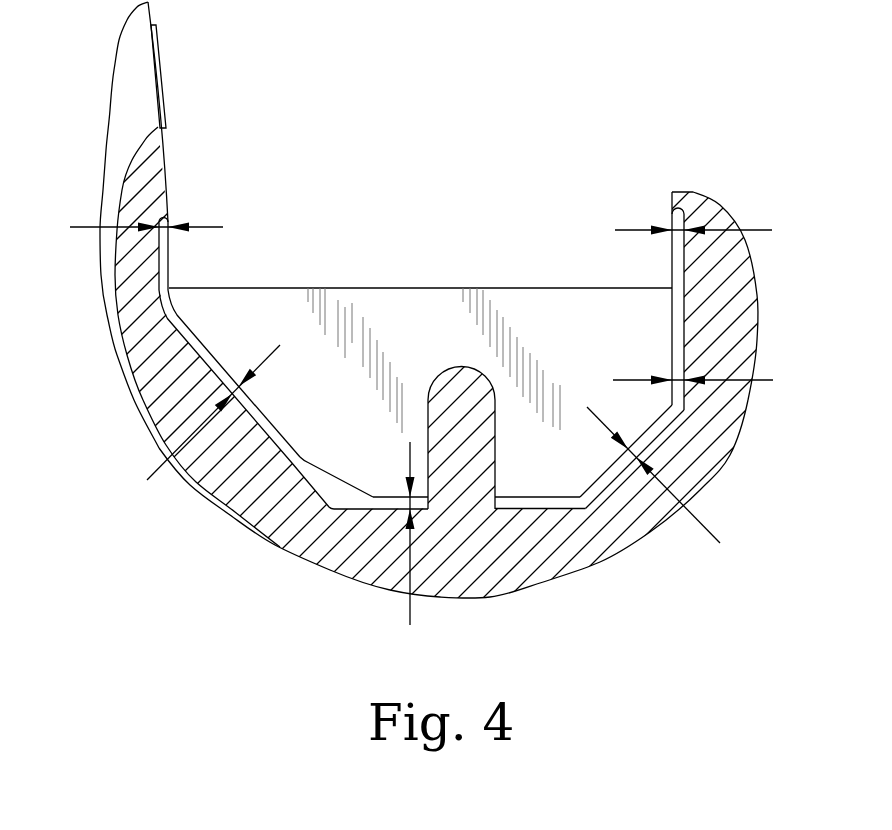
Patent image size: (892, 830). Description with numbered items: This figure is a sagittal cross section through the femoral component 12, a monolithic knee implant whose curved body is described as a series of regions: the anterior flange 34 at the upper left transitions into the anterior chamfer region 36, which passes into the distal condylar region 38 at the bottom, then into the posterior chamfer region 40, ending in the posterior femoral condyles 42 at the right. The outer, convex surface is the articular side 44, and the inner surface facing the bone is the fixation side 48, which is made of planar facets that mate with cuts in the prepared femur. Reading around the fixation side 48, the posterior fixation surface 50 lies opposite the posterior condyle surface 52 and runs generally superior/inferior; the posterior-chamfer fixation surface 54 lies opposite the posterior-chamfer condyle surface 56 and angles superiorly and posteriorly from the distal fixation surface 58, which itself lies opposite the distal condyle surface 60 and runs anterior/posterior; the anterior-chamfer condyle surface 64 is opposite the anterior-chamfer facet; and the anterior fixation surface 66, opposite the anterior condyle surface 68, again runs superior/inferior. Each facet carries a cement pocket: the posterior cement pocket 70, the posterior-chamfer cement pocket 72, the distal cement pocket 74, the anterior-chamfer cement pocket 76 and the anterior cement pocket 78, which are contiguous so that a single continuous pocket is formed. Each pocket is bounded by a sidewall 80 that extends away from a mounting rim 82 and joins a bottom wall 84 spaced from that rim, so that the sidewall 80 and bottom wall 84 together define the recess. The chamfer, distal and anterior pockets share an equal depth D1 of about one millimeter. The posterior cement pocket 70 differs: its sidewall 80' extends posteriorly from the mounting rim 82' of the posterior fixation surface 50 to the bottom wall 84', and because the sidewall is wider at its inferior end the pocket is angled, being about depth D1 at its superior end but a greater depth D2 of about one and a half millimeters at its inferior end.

The femoral component 12 is at (688, 100).
The anterior flange 34 is at (108, 273).
The anterior chamfer region 36 is at (222, 473).
The distal condylar region 38 is at (467, 578).
The posterior chamfer region 40 is at (715, 447).
The posterior femoral condyles 42 is at (746, 252).
The articular side 44 is at (293, 560).
The fixation side 48 is at (285, 437).
The posterior fixation surfaces 50 is at (670, 317).
The posterior condyle surfaces 52 is at (758, 322).
The posterior-chamfer fixation surfaces 54 is at (660, 417).
The posterior-chamfer condyle surfaces 56 is at (740, 438).
The distal fixation surfaces 58 is at (513, 495).
The distal condyle surfaces 60 is at (493, 597).
The anterior-chamfer condyle surfaces 64 is at (188, 477).
The anterior fixation surface 66 is at (168, 195).
The anterior condyle surface 68 is at (100, 238).
The posterior cement pocket 70 is at (674, 336).
The posterior-chamfer cement pocket 72 is at (607, 477).
The distal cement pocket 74 is at (387, 503).
The anterior-chamfer cement pocket 76 is at (303, 458).
The anterior cement pocket 78 is at (175, 266).
The sidewall 80 is at (293, 432).
The mounting rim 82 is at (395, 355).
The bottom wall 84 is at (540, 565).
The mounting rim of the posterior fixation surface 82' is at (634, 230).
The sidewall of the posterior cement pocket 80' is at (739, 309).
The bottom wall of the posterior cement pocket 84' is at (692, 422).
The cement pocket depth D1 is at (83, 227).
The inferior end depth of posterior cement pocket D2 is at (773, 381).